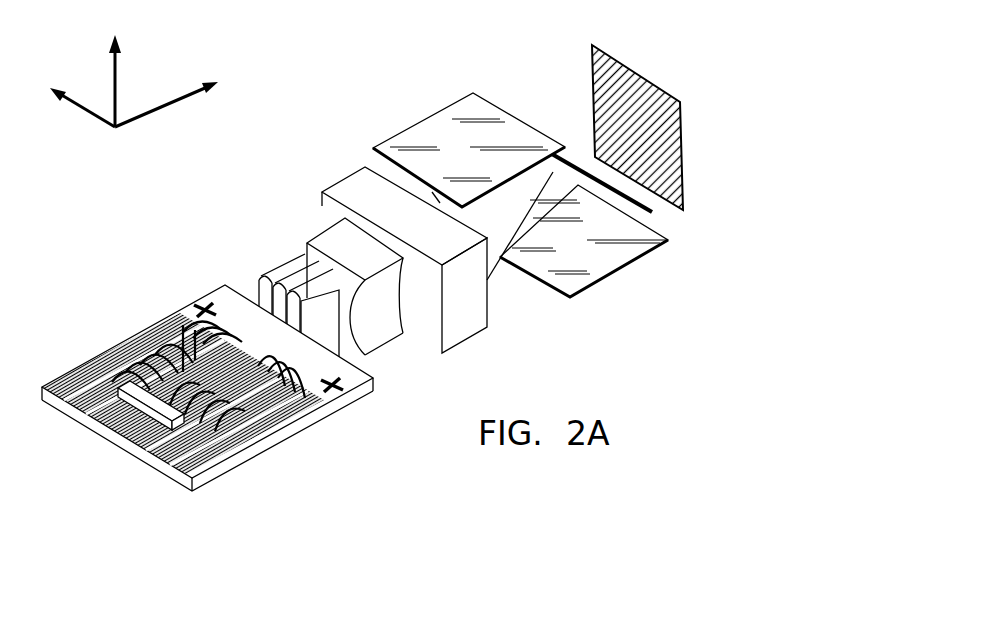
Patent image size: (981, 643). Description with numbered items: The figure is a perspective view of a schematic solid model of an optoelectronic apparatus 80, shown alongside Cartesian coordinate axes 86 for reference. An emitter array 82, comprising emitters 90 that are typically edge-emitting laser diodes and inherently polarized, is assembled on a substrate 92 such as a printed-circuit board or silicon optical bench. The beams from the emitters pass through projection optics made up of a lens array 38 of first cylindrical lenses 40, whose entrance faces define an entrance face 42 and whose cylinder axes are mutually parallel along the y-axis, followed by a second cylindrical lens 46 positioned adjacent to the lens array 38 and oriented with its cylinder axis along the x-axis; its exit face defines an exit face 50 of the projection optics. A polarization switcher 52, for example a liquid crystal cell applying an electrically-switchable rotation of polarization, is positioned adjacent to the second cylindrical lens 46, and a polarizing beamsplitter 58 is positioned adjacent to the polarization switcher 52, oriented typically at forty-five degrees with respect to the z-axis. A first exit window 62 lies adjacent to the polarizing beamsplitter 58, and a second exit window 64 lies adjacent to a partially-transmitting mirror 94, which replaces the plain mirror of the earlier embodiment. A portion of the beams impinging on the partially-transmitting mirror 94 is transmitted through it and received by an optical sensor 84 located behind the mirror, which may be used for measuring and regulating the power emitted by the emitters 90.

The lens array 38 is at (373, 329).
The first cylindrical lenses 40 is at (294, 288).
The entrance face 42 is at (258, 303).
The second cylindrical lens 46 is at (363, 318).
The exit face 50 is at (405, 300).
The polarization switcher 52 is at (465, 338).
The polarizing beamsplitter 58 is at (497, 265).
The first exit window 62 is at (421, 132).
The second exit window 64 is at (607, 265).
The optoelectronic apparatus 80 is at (270, 329).
The emitter array 82 is at (207, 381).
The optical sensor 84 is at (683, 203).
The Cartesian coordinate axes 86 is at (160, 112).
The emitters 90 is at (185, 318).
The substrate 92 is at (115, 442).
The partially-transmitting mirror 94 is at (576, 164).